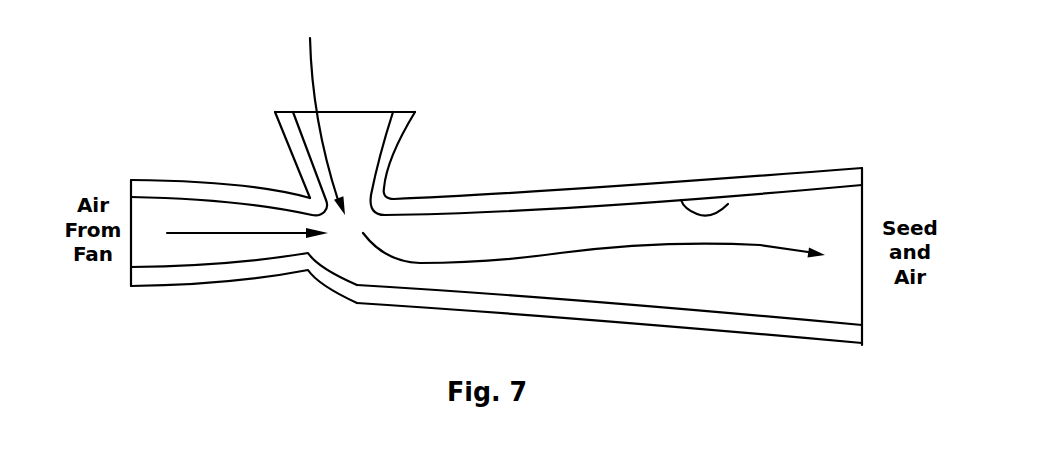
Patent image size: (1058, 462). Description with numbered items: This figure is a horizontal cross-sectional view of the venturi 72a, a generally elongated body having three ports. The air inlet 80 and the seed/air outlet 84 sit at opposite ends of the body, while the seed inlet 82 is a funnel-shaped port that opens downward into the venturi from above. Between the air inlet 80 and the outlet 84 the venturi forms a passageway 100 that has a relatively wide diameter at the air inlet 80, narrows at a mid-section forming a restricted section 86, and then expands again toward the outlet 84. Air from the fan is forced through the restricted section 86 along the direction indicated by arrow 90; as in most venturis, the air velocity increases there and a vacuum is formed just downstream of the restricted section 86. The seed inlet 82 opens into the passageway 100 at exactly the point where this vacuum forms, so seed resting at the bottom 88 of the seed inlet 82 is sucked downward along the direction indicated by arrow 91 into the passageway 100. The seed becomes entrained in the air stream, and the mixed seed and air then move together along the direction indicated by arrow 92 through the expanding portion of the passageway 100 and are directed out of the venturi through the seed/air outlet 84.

The venturi 72a is at (490, 157).
The air inlet 80 is at (147, 286).
The seed inlet 82 is at (363, 111).
The seed/air outlet 84 is at (825, 345).
The restricted section 86 is at (308, 272).
The bottom of seed inlet 88 is at (310, 197).
The arrow indicating air flow direction 90 is at (240, 233).
The arrow indicating seed flow direction 91 is at (320, 110).
The arrow indicating seed and air flow direction 92 is at (560, 253).
The passageway 100 is at (728, 204).